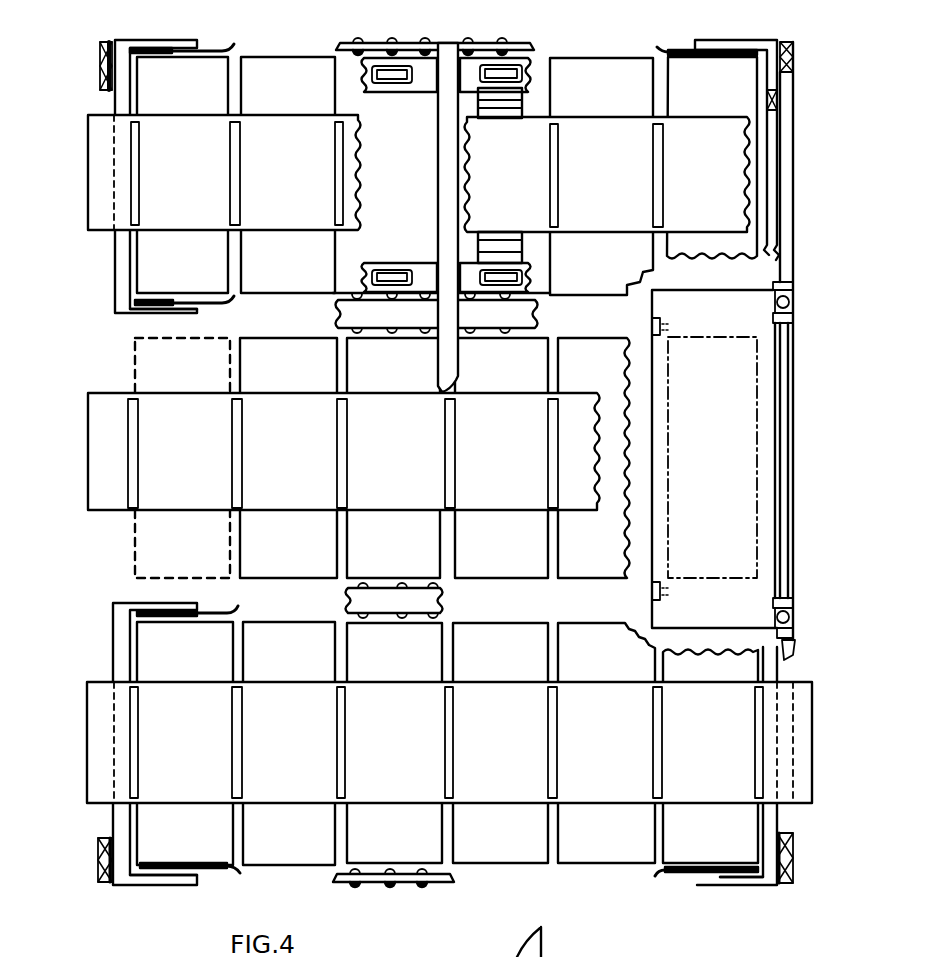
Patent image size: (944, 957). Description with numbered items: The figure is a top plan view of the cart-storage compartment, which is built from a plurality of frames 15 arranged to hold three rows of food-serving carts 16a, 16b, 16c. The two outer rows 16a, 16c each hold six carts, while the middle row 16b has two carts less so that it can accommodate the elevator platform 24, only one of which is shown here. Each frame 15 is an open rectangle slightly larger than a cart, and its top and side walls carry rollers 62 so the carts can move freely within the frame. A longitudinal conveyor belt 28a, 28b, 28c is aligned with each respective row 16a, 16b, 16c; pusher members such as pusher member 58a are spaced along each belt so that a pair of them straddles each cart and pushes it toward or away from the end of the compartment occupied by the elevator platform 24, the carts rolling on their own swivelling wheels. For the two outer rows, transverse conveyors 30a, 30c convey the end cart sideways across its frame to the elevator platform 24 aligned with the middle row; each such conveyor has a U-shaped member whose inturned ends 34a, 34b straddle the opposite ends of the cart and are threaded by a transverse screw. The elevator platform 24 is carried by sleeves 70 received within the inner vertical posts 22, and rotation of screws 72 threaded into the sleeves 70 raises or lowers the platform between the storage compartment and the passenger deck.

The frame 15 is at (100, 88).
The first row of carts 16a is at (150, 270).
The middle row of carts 16b is at (158, 538).
The third row of carts 16c is at (157, 643).
The inner vertical posts 22 is at (793, 636).
The elevator platform 24 is at (745, 427).
The conveyor belt 28a is at (207, 176).
The conveyor belt 28b is at (207, 453).
The conveyor belt 28c is at (207, 746).
The transverse conveyor 30a is at (770, 83).
The transverse conveyor 30c is at (123, 875).
The inturned end 34a is at (190, 47).
The inturned end 34b is at (175, 303).
The pusher member 58a is at (242, 168).
The rollers 62 is at (425, 44).
The sleeves 70 is at (795, 608).
The screws 72 is at (792, 617).